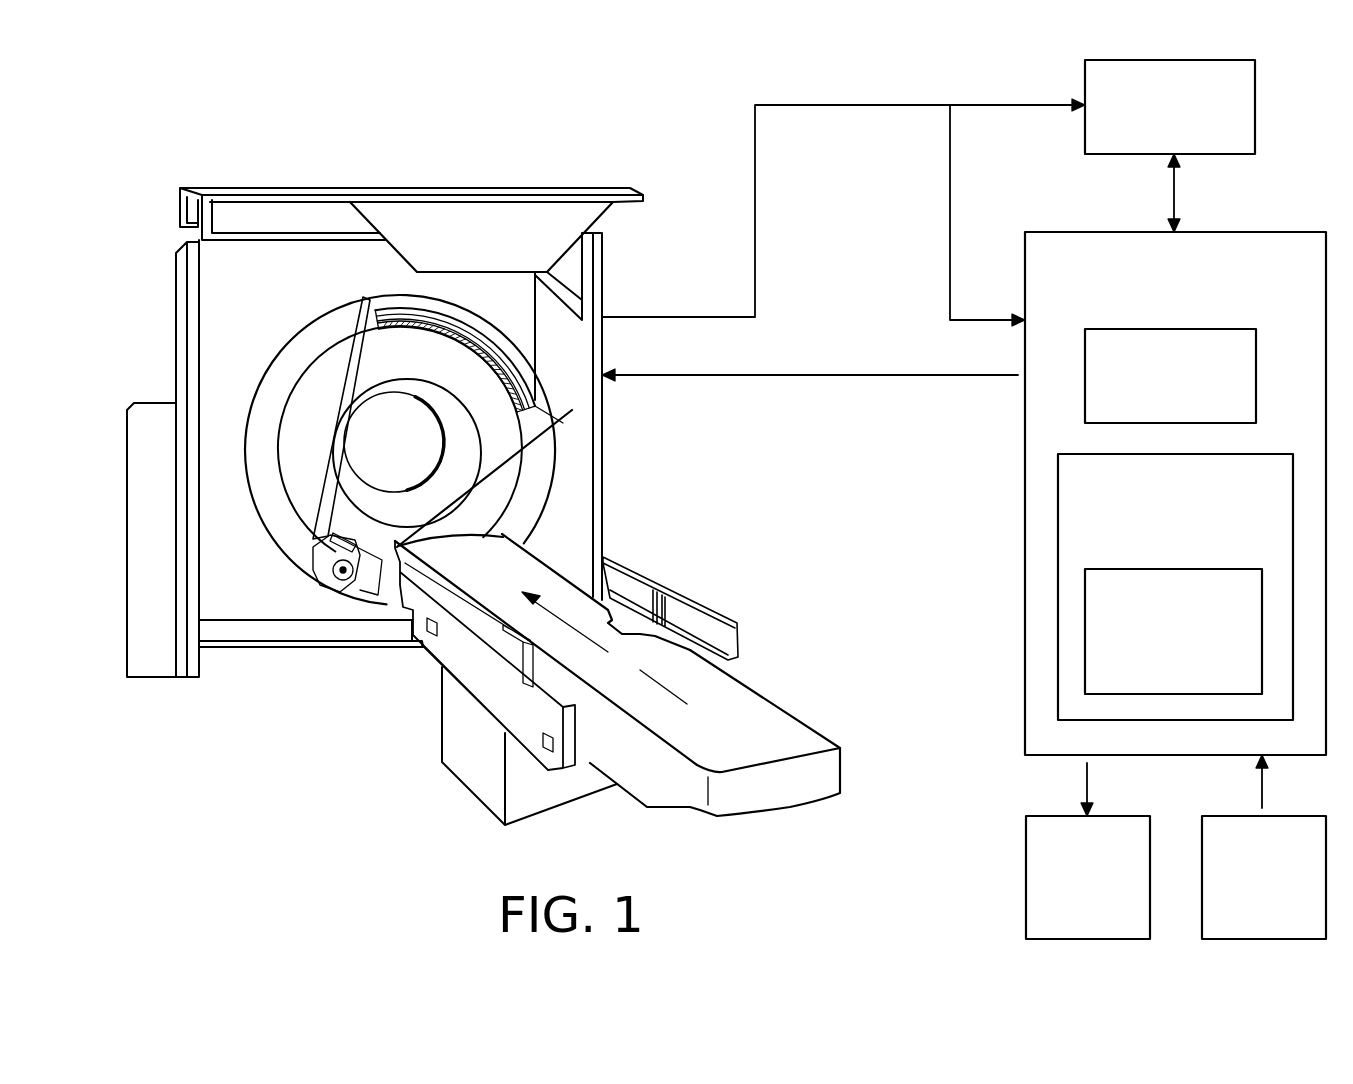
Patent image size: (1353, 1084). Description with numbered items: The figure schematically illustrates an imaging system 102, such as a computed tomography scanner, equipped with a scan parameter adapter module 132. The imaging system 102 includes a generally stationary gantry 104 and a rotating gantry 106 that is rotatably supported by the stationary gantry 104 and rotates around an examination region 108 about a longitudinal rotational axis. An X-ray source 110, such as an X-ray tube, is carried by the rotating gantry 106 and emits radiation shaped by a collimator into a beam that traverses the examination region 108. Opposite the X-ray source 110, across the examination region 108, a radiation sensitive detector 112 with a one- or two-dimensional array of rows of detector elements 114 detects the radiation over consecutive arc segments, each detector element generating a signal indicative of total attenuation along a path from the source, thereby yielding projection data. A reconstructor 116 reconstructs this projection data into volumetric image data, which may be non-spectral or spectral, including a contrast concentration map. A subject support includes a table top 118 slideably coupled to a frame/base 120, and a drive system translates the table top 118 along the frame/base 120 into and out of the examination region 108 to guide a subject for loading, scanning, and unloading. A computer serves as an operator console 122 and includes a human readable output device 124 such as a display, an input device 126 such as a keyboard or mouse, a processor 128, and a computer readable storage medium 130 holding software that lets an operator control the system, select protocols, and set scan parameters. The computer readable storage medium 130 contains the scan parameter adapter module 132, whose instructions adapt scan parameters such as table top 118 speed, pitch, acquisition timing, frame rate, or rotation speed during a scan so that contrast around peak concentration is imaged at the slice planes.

The imaging system 102 is at (165, 144).
The stationary gantry 104 is at (364, 436).
The rotating gantry 106 is at (372, 353).
The examination region 108 is at (414, 455).
The X-ray source 110 is at (343, 585).
The radiation sensitive detector 112 is at (528, 412).
The detector elements 114 is at (428, 326).
The reconstructor 116 is at (1193, 138).
The table top 118 is at (817, 722).
The frame/base 120 is at (460, 780).
The operator console 122 is at (1195, 304).
The human readable output device 124 is at (1109, 922).
The input device 126 is at (1284, 922).
The processor 128 is at (1193, 406).
The computer readable storage medium 130 is at (1195, 554).
The scan parameter adapter module 132 is at (1195, 672).